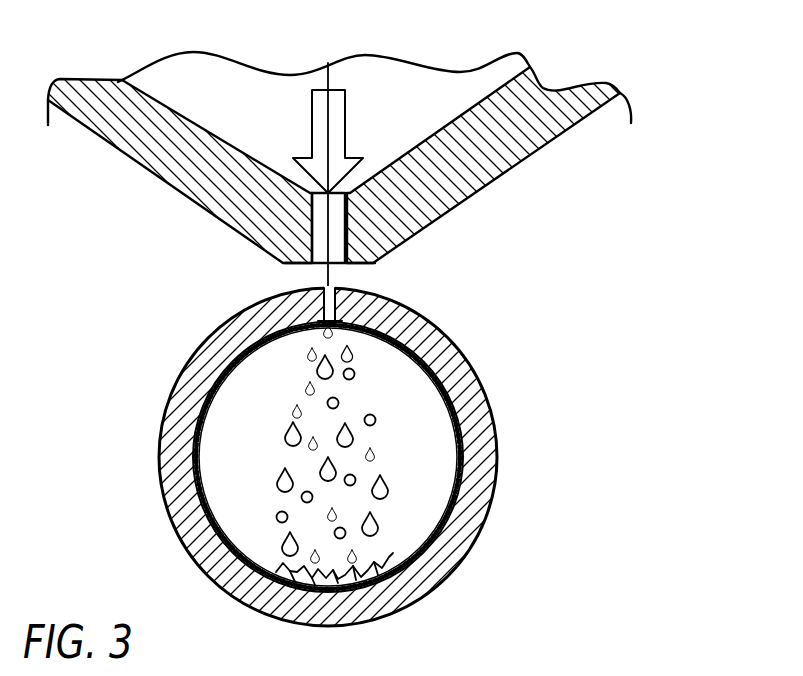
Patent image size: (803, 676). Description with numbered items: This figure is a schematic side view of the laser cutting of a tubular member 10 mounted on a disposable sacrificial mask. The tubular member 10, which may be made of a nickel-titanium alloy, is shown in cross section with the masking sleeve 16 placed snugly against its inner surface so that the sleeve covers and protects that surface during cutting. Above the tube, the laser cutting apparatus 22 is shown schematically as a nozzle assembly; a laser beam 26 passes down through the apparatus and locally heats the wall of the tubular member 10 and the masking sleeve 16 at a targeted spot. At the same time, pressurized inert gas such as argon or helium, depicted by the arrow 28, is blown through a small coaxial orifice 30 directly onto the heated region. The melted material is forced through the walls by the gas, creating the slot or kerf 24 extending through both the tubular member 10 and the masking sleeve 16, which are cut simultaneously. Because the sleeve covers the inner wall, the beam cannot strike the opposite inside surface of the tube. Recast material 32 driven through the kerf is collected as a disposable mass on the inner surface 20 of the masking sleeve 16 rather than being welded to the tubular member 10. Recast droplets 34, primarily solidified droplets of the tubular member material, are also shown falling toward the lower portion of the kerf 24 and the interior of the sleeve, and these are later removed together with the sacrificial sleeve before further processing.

The tubular member 10 is at (463, 351).
The masking sleeve 16 is at (460, 412).
The inner surface 20 is at (463, 475).
The laser cutting apparatus 22 is at (550, 182).
The kerf 24 is at (336, 305).
The laser beam 26 is at (332, 77).
The arrow 28 is at (346, 130).
The coaxial orifice 30 is at (310, 218).
The recast material 32 is at (385, 562).
The recast droplets 34 is at (322, 323).